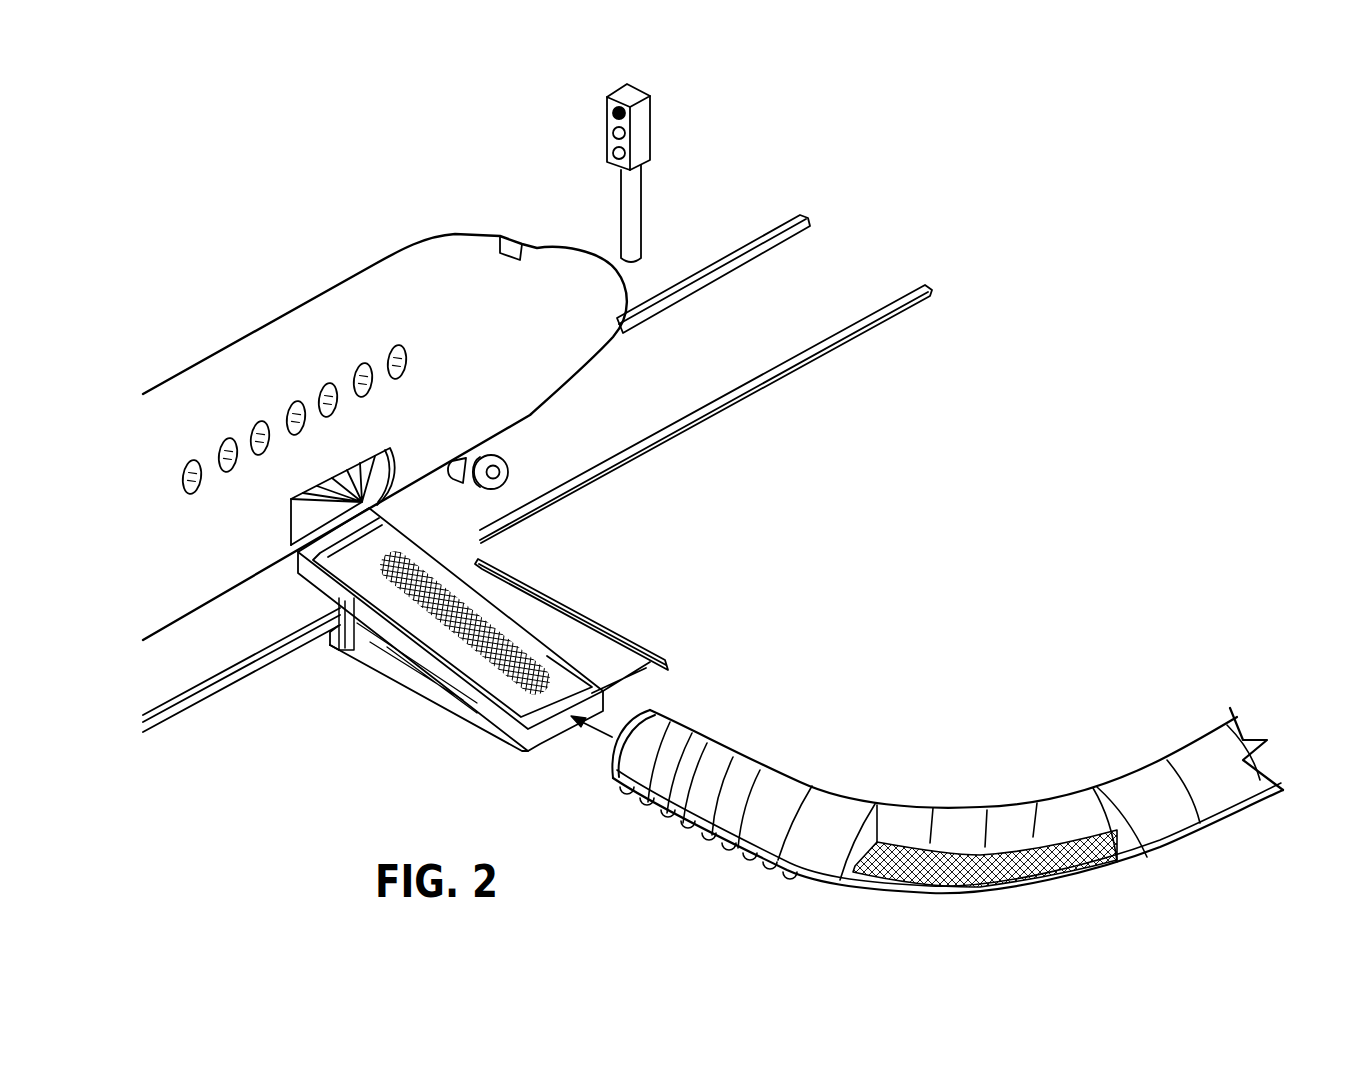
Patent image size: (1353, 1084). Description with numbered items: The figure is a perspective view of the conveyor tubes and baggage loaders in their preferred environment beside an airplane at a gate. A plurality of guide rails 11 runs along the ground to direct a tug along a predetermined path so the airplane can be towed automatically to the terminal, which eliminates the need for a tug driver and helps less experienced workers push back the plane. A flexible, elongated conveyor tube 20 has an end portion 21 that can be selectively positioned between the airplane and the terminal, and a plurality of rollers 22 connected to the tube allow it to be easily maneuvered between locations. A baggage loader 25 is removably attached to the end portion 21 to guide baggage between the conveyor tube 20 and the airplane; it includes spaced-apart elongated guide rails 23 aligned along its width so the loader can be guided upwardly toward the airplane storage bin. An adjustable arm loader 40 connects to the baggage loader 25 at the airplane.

The guide rails 11 is at (730, 253).
The conveyor tubes 20 is at (783, 790).
The end portions 21 is at (655, 708).
The rollers 22 is at (643, 807).
The elongated guide rails 23 is at (590, 607).
The baggage loaders 25 is at (487, 677).
The adjustable arm loaders 40 is at (291, 546).